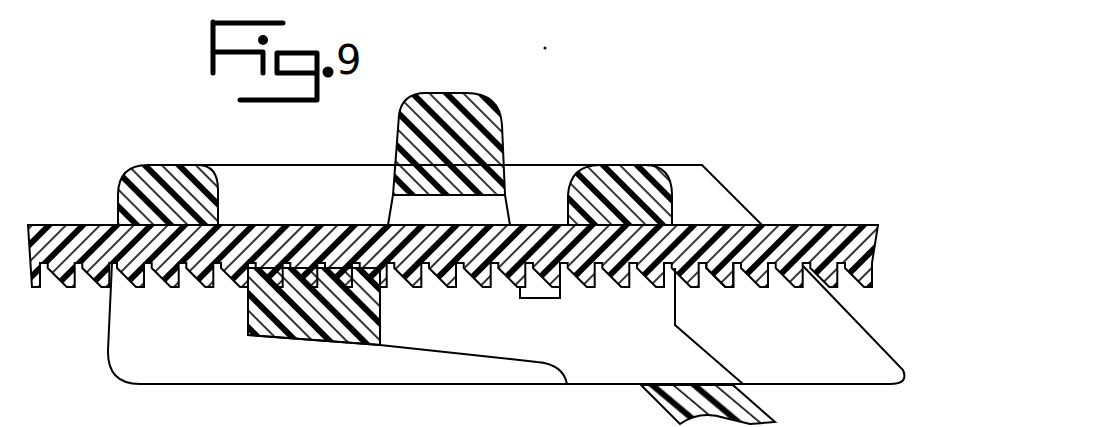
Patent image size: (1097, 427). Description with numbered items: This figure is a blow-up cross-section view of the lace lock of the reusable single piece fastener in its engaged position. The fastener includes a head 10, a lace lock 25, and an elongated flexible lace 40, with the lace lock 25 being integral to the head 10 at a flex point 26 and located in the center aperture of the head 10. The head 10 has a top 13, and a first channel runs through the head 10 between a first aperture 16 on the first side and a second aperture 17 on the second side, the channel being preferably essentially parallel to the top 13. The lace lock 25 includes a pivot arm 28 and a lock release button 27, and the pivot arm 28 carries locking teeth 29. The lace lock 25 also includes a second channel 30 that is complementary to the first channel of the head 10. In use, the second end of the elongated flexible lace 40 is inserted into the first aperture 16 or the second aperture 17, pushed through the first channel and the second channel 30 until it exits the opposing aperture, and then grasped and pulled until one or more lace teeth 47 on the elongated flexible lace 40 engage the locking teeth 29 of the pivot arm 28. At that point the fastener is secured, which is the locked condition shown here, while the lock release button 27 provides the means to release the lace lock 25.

The head 10 is at (713, 185).
The top 13 is at (577, 165).
The first aperture 16 is at (862, 375).
The second aperture 17 is at (127, 300).
The lace lock 25 is at (467, 327).
The flex point 26 is at (557, 367).
The lock release button 27 is at (463, 93).
The pivot arm 28 is at (310, 330).
The locking teeth 29 is at (247, 292).
The second channel 30 is at (403, 205).
The elongated flexible lace 40 is at (847, 233).
The lace teeth 47 is at (720, 273).